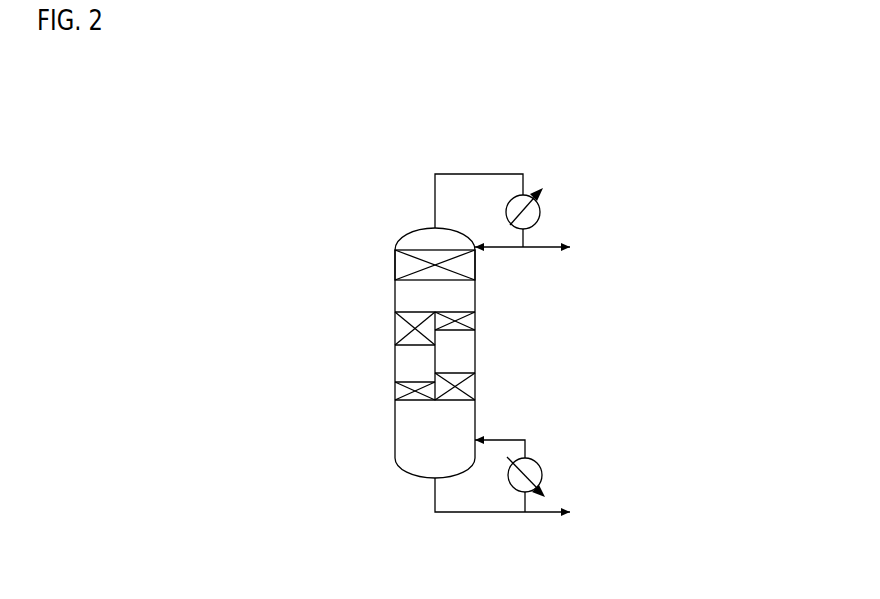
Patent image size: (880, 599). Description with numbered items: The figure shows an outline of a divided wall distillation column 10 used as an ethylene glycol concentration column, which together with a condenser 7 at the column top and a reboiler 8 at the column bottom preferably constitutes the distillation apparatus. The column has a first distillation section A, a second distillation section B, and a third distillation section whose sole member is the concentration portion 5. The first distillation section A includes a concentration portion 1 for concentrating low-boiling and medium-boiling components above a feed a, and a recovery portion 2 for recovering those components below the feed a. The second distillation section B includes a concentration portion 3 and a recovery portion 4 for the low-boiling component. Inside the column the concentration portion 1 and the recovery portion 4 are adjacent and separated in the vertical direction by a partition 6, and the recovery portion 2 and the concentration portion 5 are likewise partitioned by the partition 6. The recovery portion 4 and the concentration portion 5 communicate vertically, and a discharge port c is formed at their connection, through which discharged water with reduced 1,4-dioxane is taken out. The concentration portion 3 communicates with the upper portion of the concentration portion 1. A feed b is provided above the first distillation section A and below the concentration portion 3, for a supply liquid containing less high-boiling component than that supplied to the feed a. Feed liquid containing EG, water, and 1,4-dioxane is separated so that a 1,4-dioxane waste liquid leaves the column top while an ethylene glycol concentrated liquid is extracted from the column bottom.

The divided wall distillation column 10 is at (299, 170).
The condenser 7 is at (541, 206).
The reboiler 8 is at (542, 465).
The concentration portion 3 is at (477, 272).
The recovery portion 4 is at (477, 318).
The partition 6 is at (438, 361).
The concentration portion 5 is at (441, 385).
The concentration portion 1 is at (425, 350).
The recovery portion 2 is at (428, 381).
The first distillation section A is at (361, 385).
The second distillation section B is at (522, 263).
The feed a is at (395, 368).
The feed b is at (395, 285).
The discharge port c is at (475, 350).